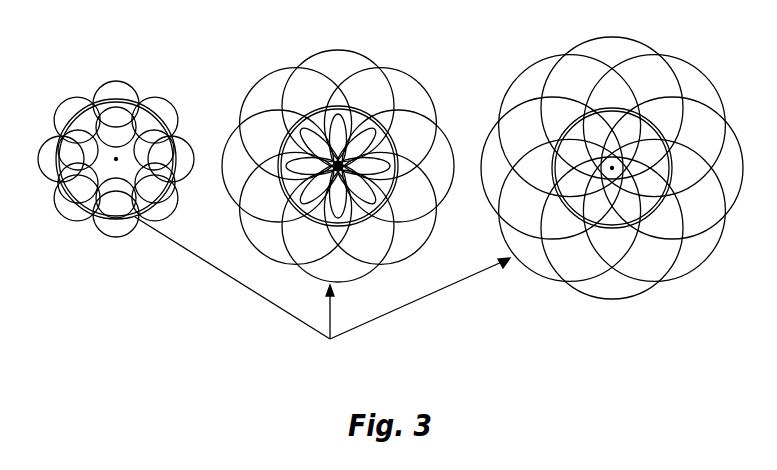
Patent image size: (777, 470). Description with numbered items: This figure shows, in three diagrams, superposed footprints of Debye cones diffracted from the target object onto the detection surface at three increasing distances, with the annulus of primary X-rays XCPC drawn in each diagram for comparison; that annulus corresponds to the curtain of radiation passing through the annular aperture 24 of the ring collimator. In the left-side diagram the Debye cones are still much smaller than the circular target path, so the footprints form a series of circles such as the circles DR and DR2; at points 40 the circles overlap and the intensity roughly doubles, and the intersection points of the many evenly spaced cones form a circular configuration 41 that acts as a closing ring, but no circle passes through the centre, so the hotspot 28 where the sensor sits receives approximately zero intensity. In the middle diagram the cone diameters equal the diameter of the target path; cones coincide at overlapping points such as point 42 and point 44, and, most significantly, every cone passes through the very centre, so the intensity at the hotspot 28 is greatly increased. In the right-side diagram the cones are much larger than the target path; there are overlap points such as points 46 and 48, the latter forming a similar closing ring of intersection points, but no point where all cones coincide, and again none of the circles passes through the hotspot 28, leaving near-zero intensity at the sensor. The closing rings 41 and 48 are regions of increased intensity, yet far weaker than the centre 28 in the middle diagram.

The annular aperture 24 is at (605, 230).
The hotspot 28 is at (114, 156).
The overlap points 40 is at (142, 103).
The intersection points 41 is at (106, 178).
The overlapping point 42 is at (384, 64).
The overlapping point 44 is at (397, 108).
The overlap point 46 is at (613, 164).
The closing ring of intersection points 48 is at (608, 172).
The Debye cone circle DR is at (48, 137).
The Debye cone circle DR2 is at (448, 198).
The annulus of primary X-rays XCPC is at (173, 217).